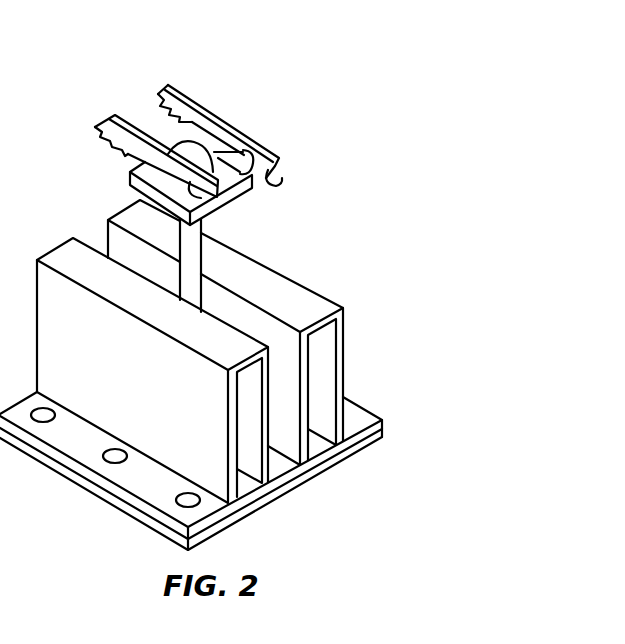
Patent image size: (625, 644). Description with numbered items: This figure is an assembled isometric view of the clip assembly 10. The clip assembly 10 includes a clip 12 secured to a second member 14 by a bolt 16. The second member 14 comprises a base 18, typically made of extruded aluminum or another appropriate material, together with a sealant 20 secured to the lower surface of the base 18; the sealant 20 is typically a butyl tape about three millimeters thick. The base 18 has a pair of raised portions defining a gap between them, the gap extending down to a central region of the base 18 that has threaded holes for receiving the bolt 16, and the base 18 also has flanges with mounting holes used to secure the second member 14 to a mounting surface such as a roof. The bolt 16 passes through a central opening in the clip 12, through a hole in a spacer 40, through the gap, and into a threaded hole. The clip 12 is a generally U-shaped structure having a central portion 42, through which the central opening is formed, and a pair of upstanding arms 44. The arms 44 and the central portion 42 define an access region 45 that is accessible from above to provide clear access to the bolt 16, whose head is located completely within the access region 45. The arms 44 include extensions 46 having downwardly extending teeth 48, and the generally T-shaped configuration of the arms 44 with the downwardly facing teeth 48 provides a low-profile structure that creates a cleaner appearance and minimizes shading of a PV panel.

The clip assembly 10 is at (223, 275).
The clip 12 is at (194, 136).
The second member 14 is at (223, 375).
The bolt 16 is at (196, 261).
The base 18 is at (341, 347).
The sealant 20 is at (342, 462).
The spacer 40 is at (128, 185).
The central portion 42 is at (242, 172).
The upstanding arms 44 is at (236, 113).
The access region 45 is at (135, 134).
The extensions 46 is at (183, 80).
The teeth 48 is at (100, 141).